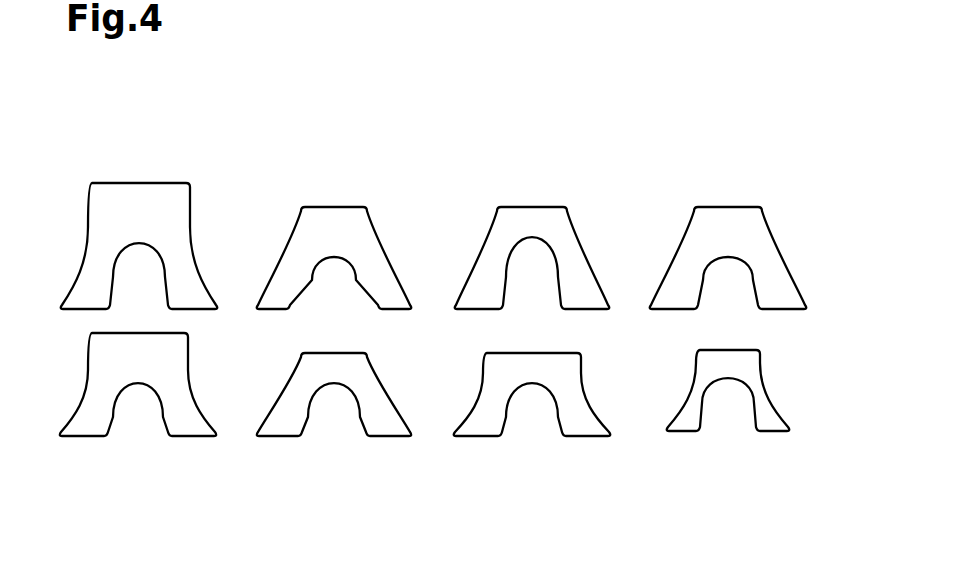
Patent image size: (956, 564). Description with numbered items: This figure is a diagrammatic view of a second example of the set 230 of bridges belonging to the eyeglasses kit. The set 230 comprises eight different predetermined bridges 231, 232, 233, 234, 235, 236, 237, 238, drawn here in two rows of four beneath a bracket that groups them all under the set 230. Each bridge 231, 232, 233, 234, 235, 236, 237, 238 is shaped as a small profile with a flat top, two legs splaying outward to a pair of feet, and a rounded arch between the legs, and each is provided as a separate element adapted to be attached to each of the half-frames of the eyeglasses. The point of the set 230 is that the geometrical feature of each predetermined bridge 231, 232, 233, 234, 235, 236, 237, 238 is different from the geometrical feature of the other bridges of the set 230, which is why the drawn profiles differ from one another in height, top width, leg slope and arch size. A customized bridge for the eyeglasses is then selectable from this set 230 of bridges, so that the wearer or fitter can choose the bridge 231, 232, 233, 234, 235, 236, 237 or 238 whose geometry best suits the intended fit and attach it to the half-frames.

The set of bridges 230 is at (812, 104).
The predetermined bridge 231 is at (152, 200).
The predetermined bridge 232 is at (334, 225).
The predetermined bridge 233 is at (529, 223).
The predetermined bridge 234 is at (728, 223).
The predetermined bridge 235 is at (88, 423).
The predetermined bridge 236 is at (287, 423).
The predetermined bridge 237 is at (482, 423).
The predetermined bridge 238 is at (687, 423).